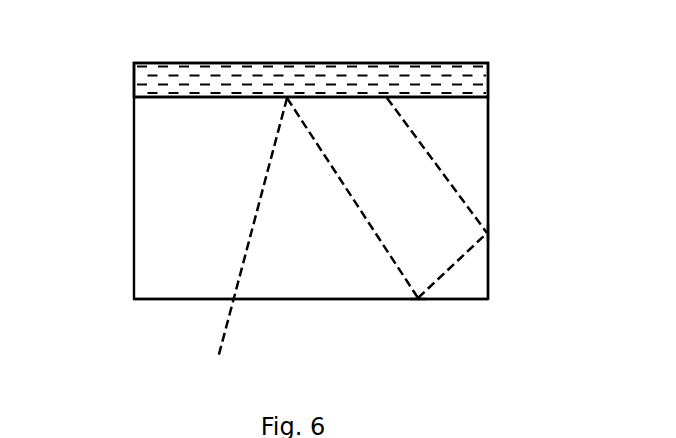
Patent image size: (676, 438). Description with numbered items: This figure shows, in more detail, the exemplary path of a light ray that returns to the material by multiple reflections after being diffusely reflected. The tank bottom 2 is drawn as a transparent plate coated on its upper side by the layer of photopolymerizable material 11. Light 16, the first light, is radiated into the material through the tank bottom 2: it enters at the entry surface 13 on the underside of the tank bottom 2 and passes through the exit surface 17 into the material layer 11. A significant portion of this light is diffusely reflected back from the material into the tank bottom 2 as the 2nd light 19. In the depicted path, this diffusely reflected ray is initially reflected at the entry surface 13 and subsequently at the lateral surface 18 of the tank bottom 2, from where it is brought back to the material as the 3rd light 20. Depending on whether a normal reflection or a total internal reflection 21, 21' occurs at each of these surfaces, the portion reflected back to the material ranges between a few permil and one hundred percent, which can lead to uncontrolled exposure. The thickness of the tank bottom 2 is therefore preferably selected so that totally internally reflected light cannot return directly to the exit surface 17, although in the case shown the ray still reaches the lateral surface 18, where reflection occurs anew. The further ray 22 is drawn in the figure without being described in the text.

The tank bottom 2 is at (150, 217).
The photopolymerizable material 11 is at (147, 85).
The entry surface 13 is at (182, 302).
The light 16 is at (245, 260).
The exit surface 17 is at (223, 95).
The lateral surface 18 is at (488, 165).
The 2nd light 19 is at (388, 255).
The 3rd light 20 is at (450, 272).
The total internal reflection 21 is at (427, 345).
The total internal reflection 21' is at (528, 246).
The crack 22 is at (462, 202).